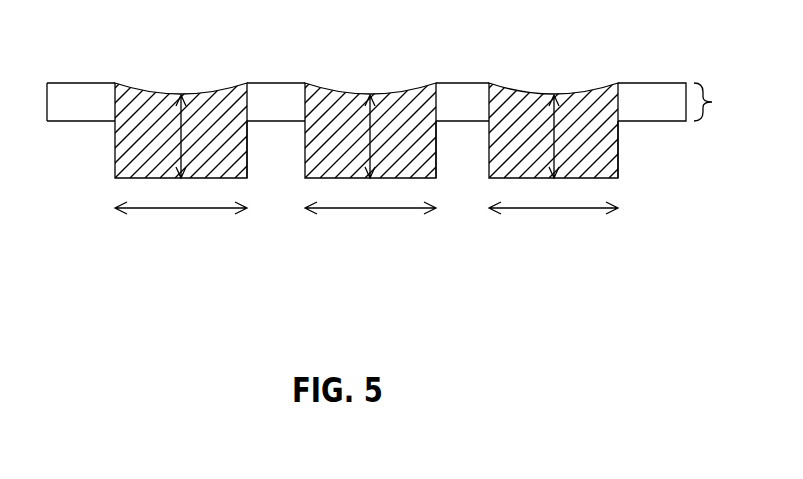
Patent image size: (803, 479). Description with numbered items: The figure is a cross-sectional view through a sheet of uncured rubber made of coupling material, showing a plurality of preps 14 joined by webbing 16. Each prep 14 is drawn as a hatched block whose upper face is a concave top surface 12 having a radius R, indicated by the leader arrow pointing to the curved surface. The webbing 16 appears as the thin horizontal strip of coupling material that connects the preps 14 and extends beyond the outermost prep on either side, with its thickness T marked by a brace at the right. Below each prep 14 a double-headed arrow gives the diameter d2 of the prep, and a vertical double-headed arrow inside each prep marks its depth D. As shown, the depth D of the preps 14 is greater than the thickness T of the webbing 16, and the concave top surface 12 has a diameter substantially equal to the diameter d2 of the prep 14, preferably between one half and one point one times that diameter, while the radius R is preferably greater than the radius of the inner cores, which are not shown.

The concave top surface 12 is at (143, 92).
The prep 14 is at (247, 157).
The webbing 16 is at (84, 83).
The depth of the preps D is at (213, 92).
The radius of the concave top surfaces R is at (193, 92).
The diameter of the preps d2 is at (213, 209).
The thickness of the webbing T is at (712, 102).